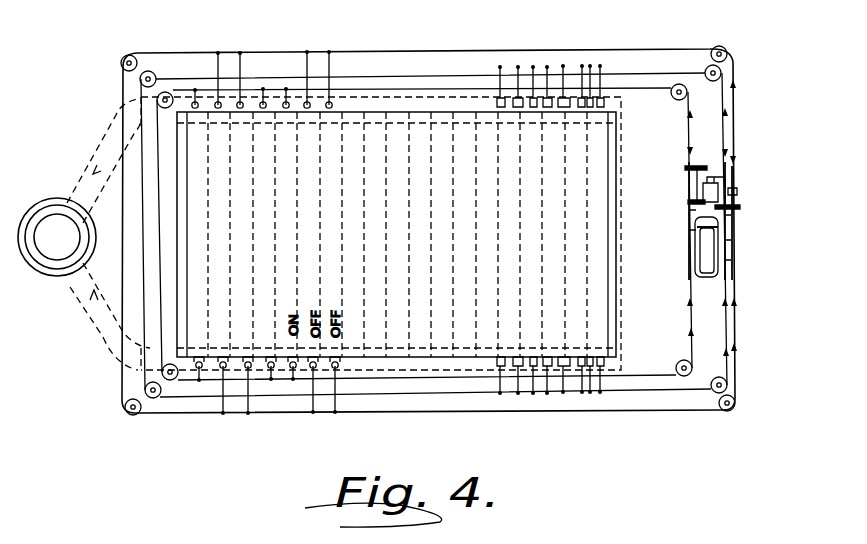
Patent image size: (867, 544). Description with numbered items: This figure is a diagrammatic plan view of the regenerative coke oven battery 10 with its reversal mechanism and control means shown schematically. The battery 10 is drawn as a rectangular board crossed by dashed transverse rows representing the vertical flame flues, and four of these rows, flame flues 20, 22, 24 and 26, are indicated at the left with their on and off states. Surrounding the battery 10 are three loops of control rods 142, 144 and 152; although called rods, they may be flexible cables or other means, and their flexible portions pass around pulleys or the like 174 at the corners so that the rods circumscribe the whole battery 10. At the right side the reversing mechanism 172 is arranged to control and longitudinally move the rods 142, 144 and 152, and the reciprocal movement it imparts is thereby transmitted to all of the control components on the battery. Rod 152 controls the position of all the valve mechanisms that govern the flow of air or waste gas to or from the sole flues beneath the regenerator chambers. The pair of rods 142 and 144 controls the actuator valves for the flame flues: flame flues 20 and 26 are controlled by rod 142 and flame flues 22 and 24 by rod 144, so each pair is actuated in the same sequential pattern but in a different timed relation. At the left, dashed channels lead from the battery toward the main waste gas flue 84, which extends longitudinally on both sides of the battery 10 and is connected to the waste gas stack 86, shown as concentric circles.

The coke oven battery 10 is at (437, 240).
The vertical flame flue 20 is at (208, 298).
The vertical flame flue 22 is at (231, 298).
The vertical flame flue 24 is at (254, 298).
The vertical flame flue 26 is at (277, 298).
The main waste gas flue 84 is at (108, 131).
The waste gas stack 86 is at (47, 217).
The control rod 142 is at (343, 88).
The control rod 144 is at (283, 35).
The control rod 152 is at (430, 67).
The reversing mechanism 172 is at (740, 257).
The pulleys 174 is at (163, 92).